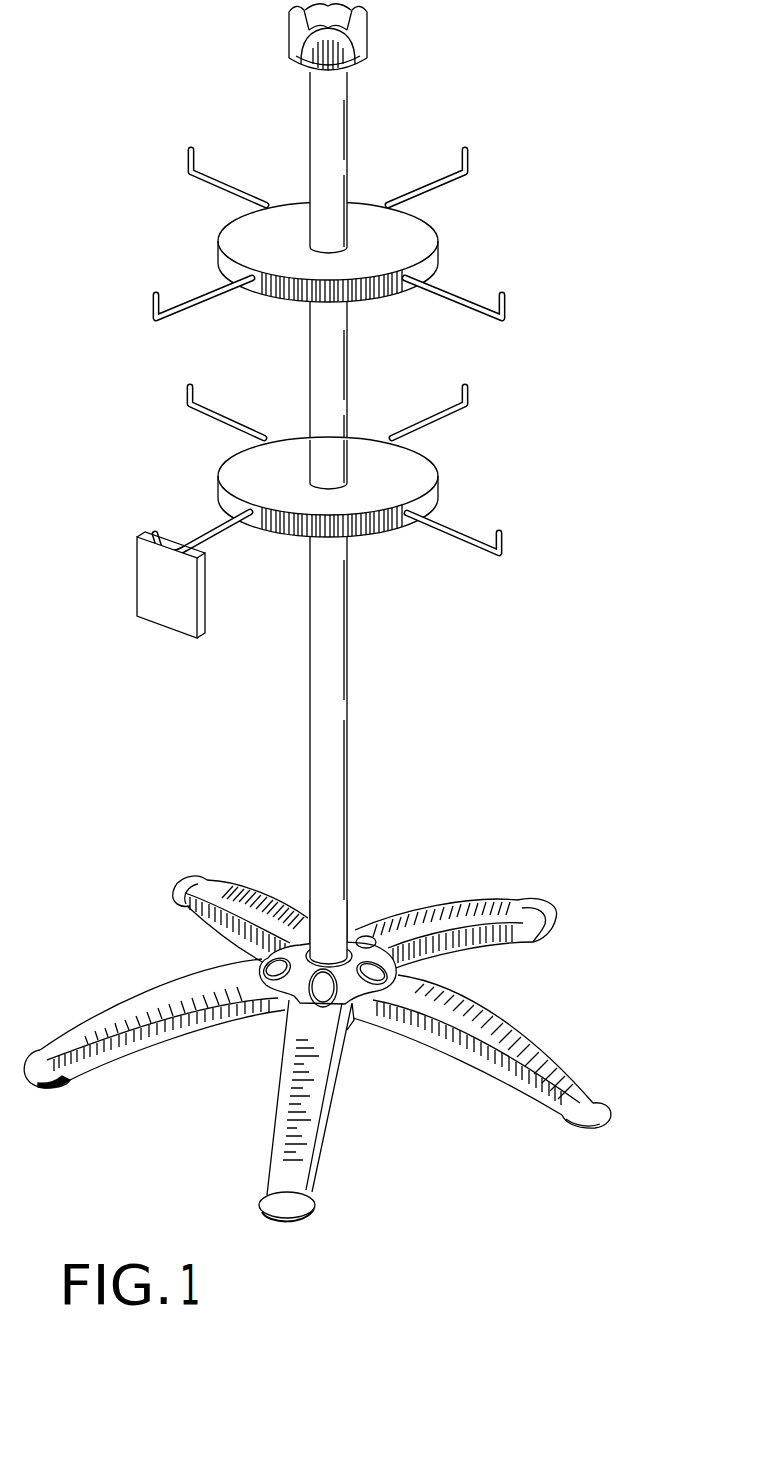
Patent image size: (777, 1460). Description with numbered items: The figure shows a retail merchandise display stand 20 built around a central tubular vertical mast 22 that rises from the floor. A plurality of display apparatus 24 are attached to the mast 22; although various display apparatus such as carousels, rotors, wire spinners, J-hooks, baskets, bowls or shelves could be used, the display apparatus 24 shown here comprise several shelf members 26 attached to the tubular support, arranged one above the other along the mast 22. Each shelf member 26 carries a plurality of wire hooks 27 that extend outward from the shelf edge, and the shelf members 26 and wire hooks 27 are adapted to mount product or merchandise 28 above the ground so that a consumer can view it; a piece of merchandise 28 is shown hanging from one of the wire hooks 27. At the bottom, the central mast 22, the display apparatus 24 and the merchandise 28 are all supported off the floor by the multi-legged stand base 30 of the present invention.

The merchandise display stand 20 is at (355, 629).
The central tubular vertical mast 22 is at (332, 842).
The display apparatus 24 is at (299, 507).
The shelf member 26 is at (418, 477).
The wire hook 27 is at (472, 541).
The merchandise 28 is at (163, 605).
The stand base 30 is at (463, 1100).